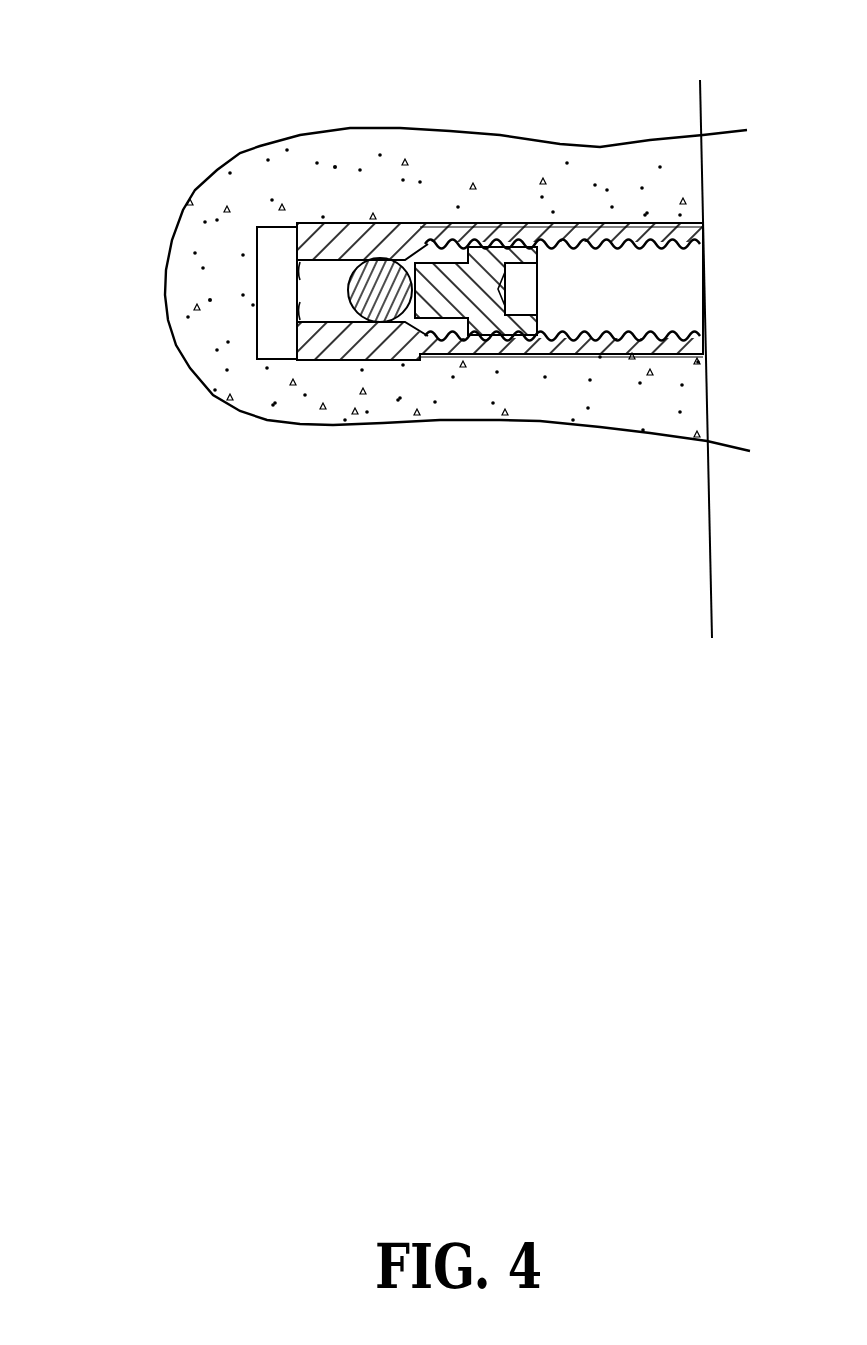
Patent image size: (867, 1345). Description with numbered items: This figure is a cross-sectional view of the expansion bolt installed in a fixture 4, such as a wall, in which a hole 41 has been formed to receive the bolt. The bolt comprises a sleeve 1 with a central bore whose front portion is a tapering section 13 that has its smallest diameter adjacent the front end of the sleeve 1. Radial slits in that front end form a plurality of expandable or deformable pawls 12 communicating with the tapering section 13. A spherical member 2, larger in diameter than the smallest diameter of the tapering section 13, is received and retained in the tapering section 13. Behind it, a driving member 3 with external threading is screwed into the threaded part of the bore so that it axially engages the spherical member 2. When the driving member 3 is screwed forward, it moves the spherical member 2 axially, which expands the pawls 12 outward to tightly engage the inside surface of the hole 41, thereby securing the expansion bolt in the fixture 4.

The sleeve 1 is at (484, 267).
The spherical member 2 is at (373, 260).
The driving member 3 is at (474, 288).
The fixture 4 is at (200, 247).
The pawls 12 is at (319, 225).
The tapering section 13 is at (330, 300).
The hole 41 is at (275, 300).